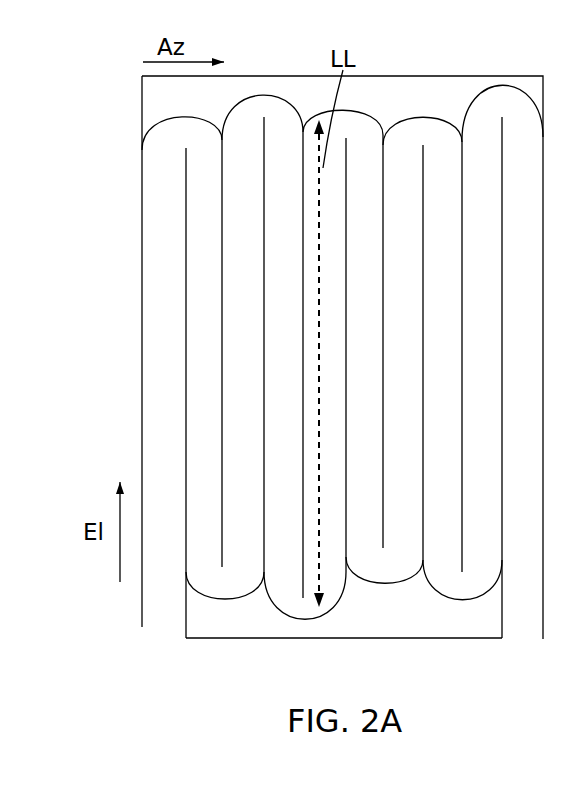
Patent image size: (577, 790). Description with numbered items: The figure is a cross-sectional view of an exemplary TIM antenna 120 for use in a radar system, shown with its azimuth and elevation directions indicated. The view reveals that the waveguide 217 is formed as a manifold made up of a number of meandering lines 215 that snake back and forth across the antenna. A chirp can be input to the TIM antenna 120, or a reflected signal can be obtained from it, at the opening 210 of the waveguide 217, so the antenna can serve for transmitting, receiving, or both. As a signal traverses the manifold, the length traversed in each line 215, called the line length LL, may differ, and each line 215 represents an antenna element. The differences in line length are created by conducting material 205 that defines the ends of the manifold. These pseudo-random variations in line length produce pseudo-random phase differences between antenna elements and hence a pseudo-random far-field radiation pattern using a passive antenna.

The TIM antenna 120 is at (102, 120).
The conducting material 205 is at (385, 615).
The opening 210 is at (170, 613).
The meandering lines 215 is at (200, 242).
The waveguide 217 is at (418, 117).